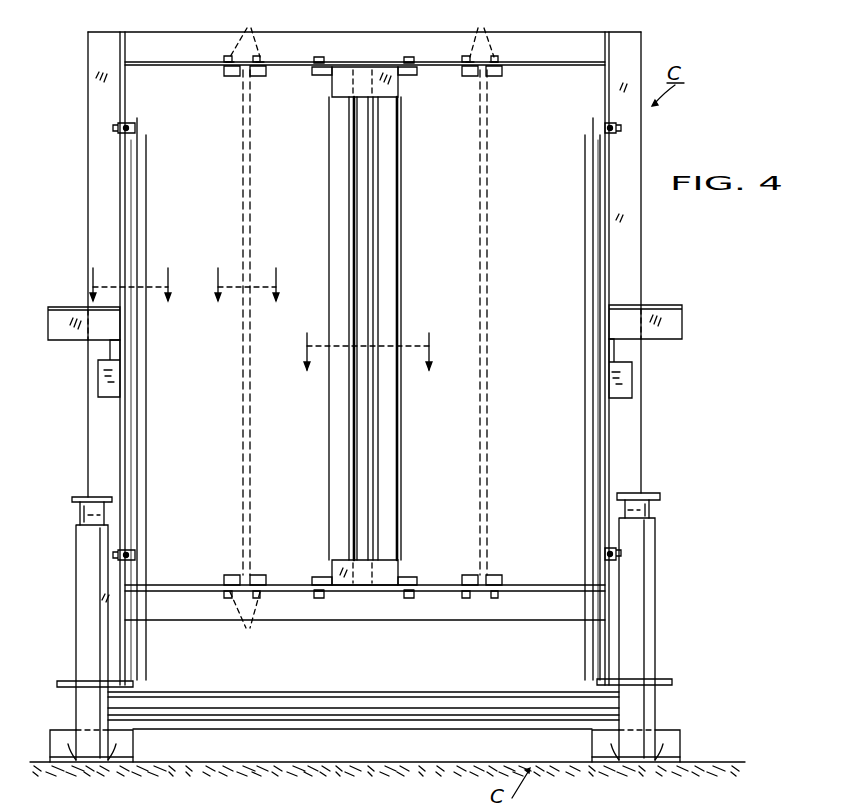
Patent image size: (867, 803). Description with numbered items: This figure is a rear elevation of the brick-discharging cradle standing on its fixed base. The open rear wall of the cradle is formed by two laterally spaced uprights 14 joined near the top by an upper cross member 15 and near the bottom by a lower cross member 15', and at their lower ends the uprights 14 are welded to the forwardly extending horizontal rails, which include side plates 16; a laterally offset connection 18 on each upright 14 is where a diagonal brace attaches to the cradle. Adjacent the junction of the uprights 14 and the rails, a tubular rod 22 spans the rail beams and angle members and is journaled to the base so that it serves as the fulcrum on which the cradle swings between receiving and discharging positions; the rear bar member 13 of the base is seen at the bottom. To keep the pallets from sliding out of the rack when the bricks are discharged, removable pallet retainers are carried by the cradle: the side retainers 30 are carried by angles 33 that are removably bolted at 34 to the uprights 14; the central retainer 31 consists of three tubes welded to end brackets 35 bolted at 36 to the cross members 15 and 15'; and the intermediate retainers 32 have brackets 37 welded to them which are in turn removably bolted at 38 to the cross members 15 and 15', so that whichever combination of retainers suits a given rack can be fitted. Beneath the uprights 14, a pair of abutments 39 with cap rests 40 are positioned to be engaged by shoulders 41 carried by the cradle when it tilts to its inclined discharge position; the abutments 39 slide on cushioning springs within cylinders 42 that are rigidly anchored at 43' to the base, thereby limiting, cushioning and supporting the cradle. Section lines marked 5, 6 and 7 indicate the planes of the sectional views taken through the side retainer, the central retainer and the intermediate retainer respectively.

The section line 5- 5 is at (127, 286).
The section line 6- 6 is at (366, 351).
The section line 7- 7 is at (248, 289).
The rear bar member 13 is at (423, 746).
The upright 14 is at (98, 201).
The upper cross member 15 is at (364, 34).
The lower cross member 15' is at (365, 626).
The plate 16 is at (70, 680).
The laterally offset connection 18 is at (690, 333).
The tubular rod 22 is at (378, 687).
The pallet retainer 30 is at (146, 455).
The central pallet retainer 31 is at (250, 243).
The pallet retainer 32 is at (380, 458).
The angle 33 is at (136, 226).
The bolt 34 is at (136, 127).
The end bracket 35 is at (382, 92).
The bolt 36 is at (402, 58).
The bracket 37 is at (255, 78).
The bolt 38 is at (364, 336).
The abutment 39 is at (92, 516).
The cap rest 40 is at (80, 496).
The shoulder 41 is at (105, 383).
The cylinder 42 is at (88, 600).
The anchorage 43' is at (365, 766).